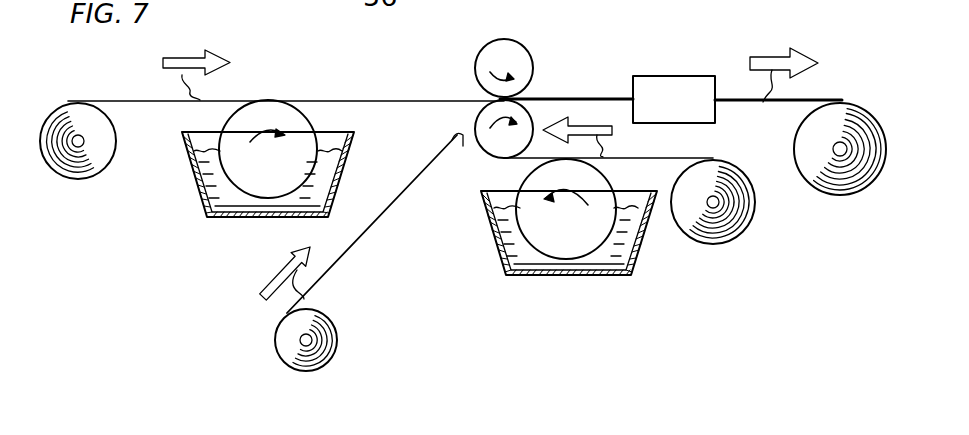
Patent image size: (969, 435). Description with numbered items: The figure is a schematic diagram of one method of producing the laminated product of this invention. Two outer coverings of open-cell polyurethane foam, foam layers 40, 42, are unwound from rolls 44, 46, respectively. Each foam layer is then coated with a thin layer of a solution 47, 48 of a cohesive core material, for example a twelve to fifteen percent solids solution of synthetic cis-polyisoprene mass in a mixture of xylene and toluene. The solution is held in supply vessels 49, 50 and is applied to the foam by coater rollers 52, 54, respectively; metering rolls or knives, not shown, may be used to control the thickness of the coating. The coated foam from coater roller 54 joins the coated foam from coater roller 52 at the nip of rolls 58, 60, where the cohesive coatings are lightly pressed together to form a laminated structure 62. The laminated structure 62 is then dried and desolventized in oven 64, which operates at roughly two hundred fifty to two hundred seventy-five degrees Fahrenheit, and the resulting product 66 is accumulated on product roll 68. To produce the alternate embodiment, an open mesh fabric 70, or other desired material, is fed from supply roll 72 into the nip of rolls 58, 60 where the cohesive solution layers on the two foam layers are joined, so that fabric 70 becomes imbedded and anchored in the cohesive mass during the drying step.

The open-cell polyurethane foam layer 40 is at (680, 158).
The open-cell polyurethane foam layer 42 is at (103, 100).
The roll 44 is at (740, 240).
The roll 46 is at (95, 182).
The solution of cohesive core material 47 is at (613, 253).
The solution of cohesive core material 48 is at (230, 195).
The supply vessel 49 is at (493, 247).
The supply vessel 50 is at (213, 218).
The coater roller 52 is at (540, 253).
The coater roller 54 is at (220, 128).
The nip roll 58 is at (487, 152).
The nip roll 60 is at (522, 42).
The laminated structure 62 is at (576, 97).
The oven 64 is at (658, 76).
The product 66 is at (745, 104).
The product roll 68 is at (867, 103).
The open mesh fabric 70 is at (345, 258).
The supply roll 72 is at (330, 361).